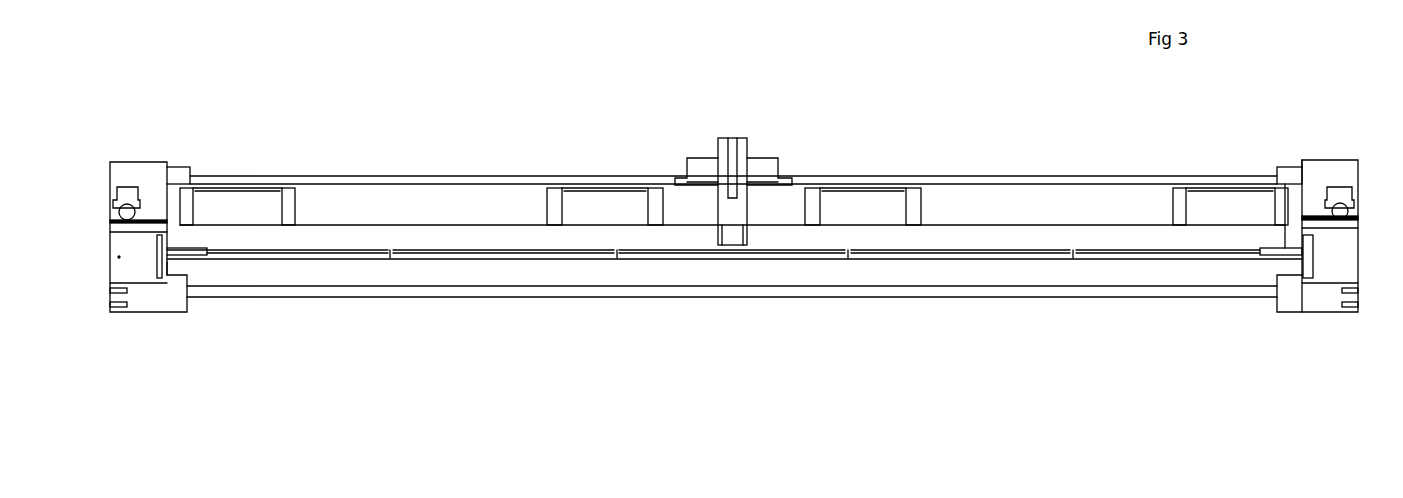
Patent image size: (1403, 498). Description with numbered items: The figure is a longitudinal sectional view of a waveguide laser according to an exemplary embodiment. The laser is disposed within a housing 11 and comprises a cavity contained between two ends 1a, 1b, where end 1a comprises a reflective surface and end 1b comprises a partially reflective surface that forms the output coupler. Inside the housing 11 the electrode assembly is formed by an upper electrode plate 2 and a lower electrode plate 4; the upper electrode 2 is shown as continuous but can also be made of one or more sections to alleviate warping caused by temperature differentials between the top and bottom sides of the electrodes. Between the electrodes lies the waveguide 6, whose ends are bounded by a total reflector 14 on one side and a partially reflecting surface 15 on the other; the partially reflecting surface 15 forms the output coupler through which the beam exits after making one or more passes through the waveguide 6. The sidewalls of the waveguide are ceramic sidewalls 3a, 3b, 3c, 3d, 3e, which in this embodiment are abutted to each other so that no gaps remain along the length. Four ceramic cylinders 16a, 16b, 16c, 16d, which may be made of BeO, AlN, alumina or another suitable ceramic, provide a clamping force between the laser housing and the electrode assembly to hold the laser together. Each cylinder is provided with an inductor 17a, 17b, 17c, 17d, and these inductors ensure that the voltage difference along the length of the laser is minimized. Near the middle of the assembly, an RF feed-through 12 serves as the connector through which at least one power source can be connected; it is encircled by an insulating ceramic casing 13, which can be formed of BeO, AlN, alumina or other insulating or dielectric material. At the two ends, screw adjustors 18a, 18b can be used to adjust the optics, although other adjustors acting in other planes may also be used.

The end 1a is at (160, 313).
The end 1b is at (1320, 313).
The upper electrode plate 2 is at (553, 245).
The ceramic sidewall 3a is at (283, 256).
The ceramic sidewall 3b is at (470, 256).
The ceramic sidewall 3c is at (742, 252).
The ceramic sidewall 3d is at (883, 255).
The ceramic sidewall 3e is at (1143, 253).
The lower electrode plate 4 is at (675, 272).
The waveguide 6 is at (632, 258).
The housing 11 is at (515, 297).
The RF feed-through 12 is at (730, 150).
The insulating ceramic casing 13 is at (698, 168).
The total reflector 14 is at (162, 288).
The partially reflecting surface 15 is at (1310, 255).
The ceramic cylinder 16a is at (258, 210).
The ceramic cylinder 16b is at (614, 200).
The ceramic cylinder 16c is at (862, 200).
The ceramic cylinder 16d is at (1235, 200).
The inductor 17a is at (188, 190).
The inductor 17b is at (553, 186).
The inductor 17c is at (806, 186).
The inductor 17d is at (1175, 190).
The screw adjustor 18a is at (135, 182).
The screw adjustor 18b is at (1340, 195).